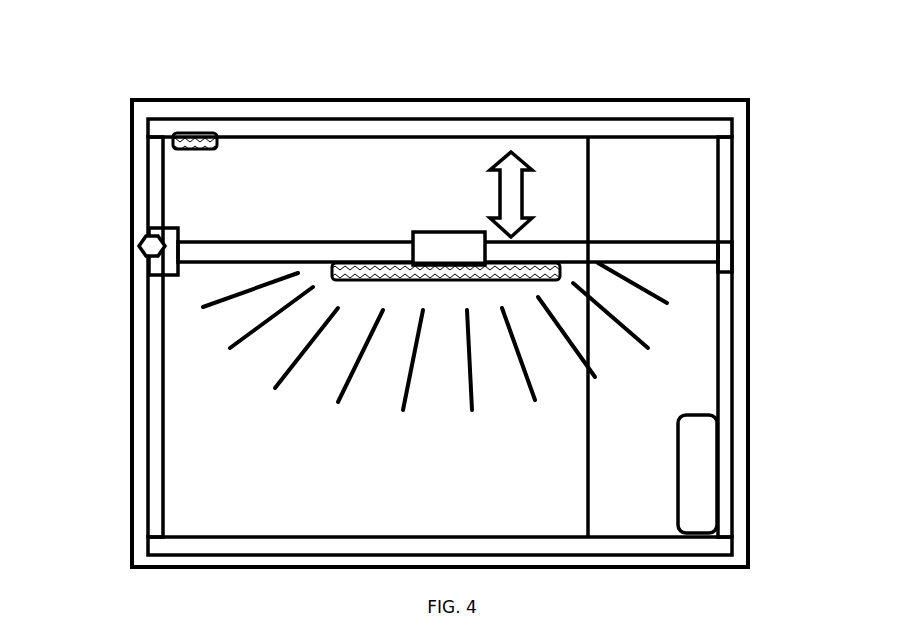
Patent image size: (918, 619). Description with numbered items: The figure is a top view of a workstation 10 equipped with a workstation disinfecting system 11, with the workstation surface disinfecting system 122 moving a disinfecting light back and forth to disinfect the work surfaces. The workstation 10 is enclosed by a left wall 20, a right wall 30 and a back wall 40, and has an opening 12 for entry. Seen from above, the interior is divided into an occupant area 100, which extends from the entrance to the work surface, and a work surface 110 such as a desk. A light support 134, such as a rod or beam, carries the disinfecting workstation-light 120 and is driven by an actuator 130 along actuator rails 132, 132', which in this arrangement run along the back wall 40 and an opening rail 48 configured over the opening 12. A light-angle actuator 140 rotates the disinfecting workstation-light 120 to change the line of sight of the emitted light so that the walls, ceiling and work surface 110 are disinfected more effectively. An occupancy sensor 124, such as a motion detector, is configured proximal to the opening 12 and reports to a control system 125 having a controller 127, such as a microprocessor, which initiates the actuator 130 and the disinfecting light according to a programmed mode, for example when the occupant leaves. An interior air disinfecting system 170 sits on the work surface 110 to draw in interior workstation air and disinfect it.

The workstation 10 is at (735, 117).
The workstation disinfecting system 11 is at (124, 75).
The opening 12 is at (158, 163).
The left wall 20 is at (255, 105).
The right wall 30 is at (630, 553).
The back wall 40 is at (738, 415).
The opening rail 48 is at (153, 433).
The occupant area 100 is at (335, 192).
The work surface 110 is at (688, 325).
The disinfecting workstation-light 120 is at (386, 262).
The workstation surface disinfecting system 122 is at (544, 204).
The occupancy sensor 124 is at (190, 133).
The control system 125 is at (140, 247).
The controller 127 is at (148, 232).
The actuator 130 is at (163, 275).
The actuator rail 132 is at (107, 350).
The actuator rail 132' is at (783, 195).
The light support 134 is at (263, 258).
The light-angle actuator 140 is at (460, 258).
The interior air disinfecting system 170 is at (715, 482).